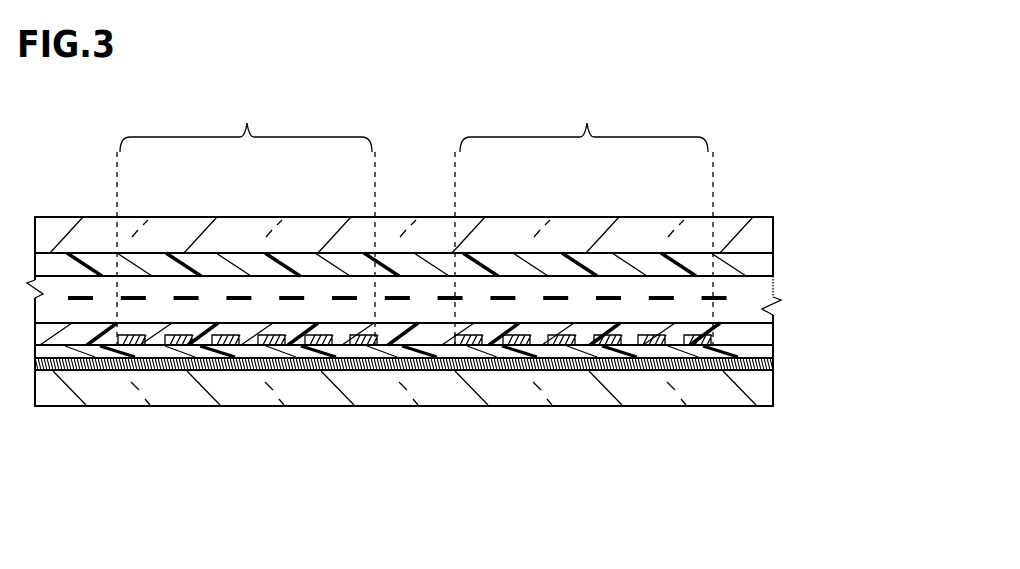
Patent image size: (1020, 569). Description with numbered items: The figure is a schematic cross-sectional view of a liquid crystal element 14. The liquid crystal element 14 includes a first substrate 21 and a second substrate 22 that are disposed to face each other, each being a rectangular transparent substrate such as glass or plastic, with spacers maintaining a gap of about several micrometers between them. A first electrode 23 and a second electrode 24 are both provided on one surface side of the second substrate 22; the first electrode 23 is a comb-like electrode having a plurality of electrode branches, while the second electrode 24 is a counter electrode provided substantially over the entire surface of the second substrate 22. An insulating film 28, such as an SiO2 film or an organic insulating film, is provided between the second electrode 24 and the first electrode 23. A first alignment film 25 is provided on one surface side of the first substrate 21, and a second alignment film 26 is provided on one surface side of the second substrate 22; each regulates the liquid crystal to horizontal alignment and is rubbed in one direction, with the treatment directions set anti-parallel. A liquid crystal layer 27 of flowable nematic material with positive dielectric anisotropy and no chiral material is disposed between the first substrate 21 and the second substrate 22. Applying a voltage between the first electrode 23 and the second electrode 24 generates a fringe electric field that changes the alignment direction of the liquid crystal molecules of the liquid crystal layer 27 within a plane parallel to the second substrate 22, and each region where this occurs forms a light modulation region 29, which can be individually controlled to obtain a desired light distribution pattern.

The liquid crystal element 14 is at (437, 558).
The first substrate 21 is at (773, 236).
The second substrate 22 is at (773, 392).
The first electrode 23 is at (264, 349).
The second electrode 24 is at (77, 352).
The first alignment film 25 is at (773, 267).
The second alignment film 26 is at (773, 338).
The liquid crystal layer 27 is at (781, 300).
The insulating film 28 is at (773, 362).
The light modulation region 29 is at (415, 216).